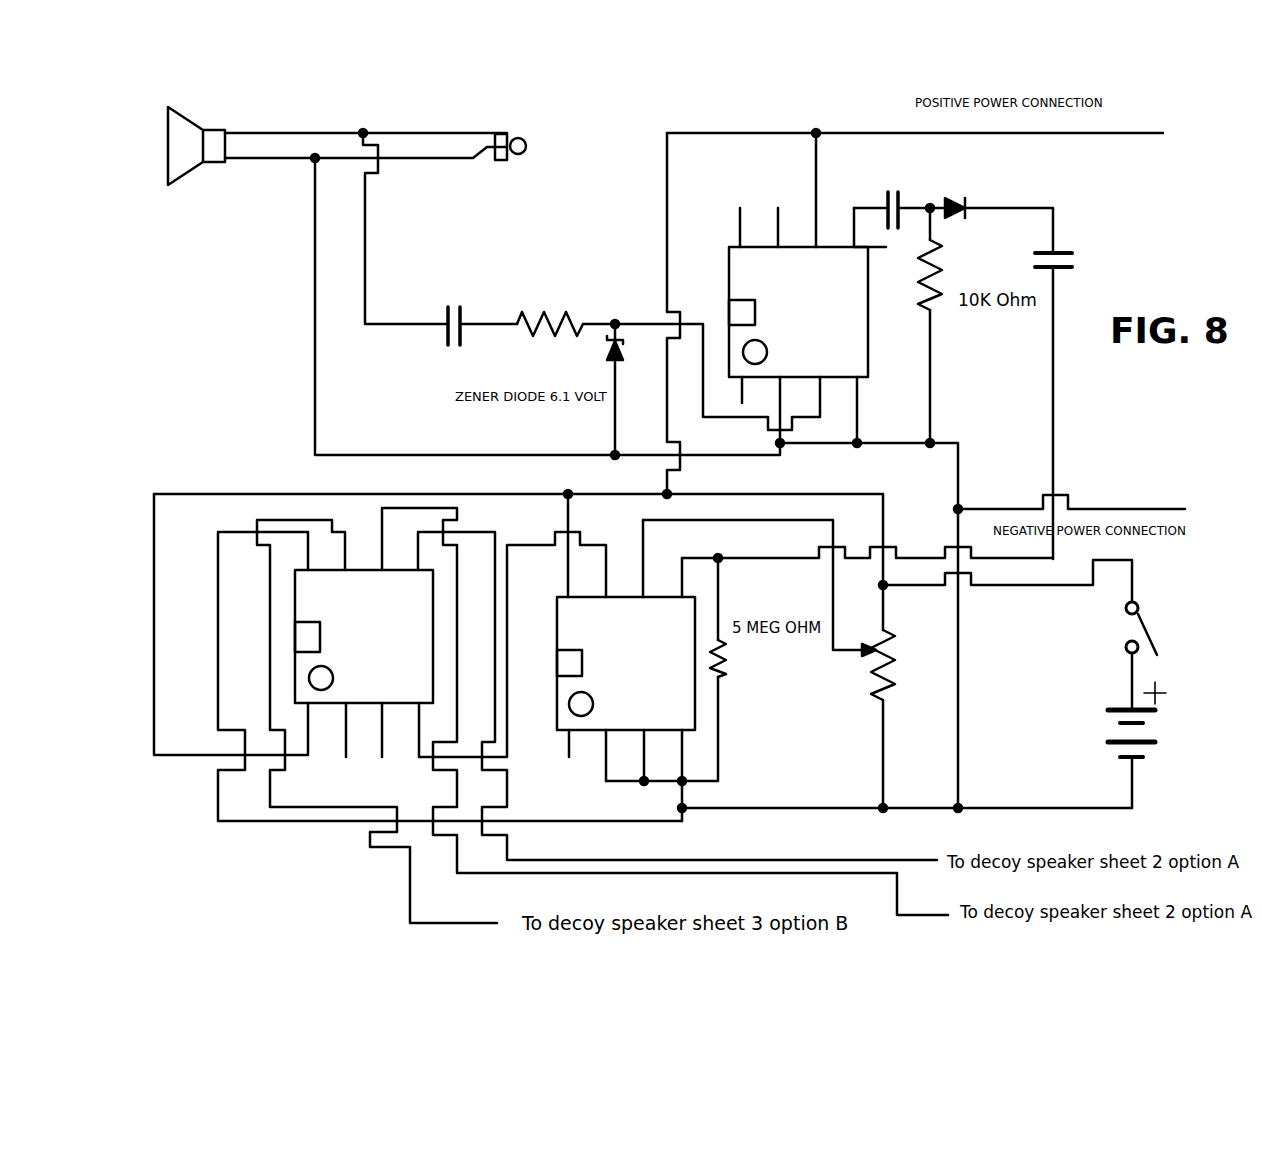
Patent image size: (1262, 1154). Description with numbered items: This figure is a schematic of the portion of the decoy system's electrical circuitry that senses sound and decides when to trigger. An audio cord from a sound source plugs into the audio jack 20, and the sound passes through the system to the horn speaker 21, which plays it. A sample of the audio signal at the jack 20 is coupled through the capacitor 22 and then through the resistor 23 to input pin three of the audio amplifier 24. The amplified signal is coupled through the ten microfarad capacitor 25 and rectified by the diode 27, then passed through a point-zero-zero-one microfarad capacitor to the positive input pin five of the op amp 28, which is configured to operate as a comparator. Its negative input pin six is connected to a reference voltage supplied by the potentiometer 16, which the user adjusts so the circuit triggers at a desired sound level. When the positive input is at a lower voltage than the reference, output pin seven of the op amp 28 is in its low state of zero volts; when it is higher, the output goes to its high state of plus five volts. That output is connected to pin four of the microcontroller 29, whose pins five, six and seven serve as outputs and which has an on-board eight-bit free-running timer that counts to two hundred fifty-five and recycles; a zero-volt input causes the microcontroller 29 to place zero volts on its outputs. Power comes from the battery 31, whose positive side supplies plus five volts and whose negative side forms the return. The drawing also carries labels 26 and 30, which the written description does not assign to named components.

The potentiometer 16 is at (865, 717).
The audio jack 20 is at (470, 182).
The speaker 21 is at (190, 118).
The capacitor 22 is at (438, 337).
The resistor 23 is at (533, 335).
The LM386 audio amplifier 24 is at (711, 230).
The 10 micro farad capacitor 25 is at (902, 254).
The 1n1001 diode 26 is at (977, 232).
The diode 27 is at (1080, 226).
The TL082 OP AMP 28 is at (665, 565).
The microcontroller 29 is at (338, 760).
The switch 30 is at (1178, 612).
The battery 31 is at (1181, 767).